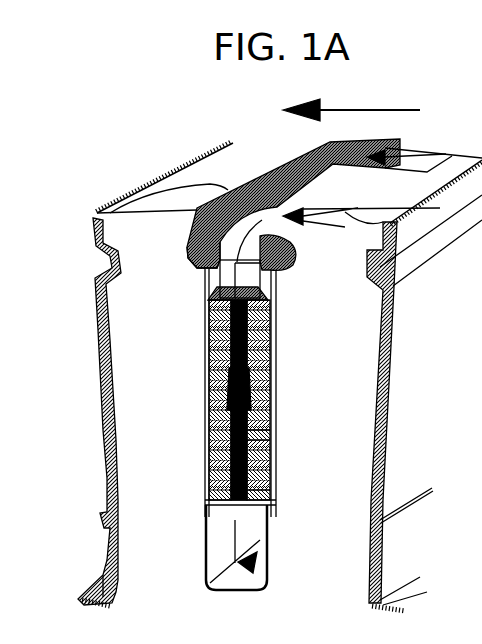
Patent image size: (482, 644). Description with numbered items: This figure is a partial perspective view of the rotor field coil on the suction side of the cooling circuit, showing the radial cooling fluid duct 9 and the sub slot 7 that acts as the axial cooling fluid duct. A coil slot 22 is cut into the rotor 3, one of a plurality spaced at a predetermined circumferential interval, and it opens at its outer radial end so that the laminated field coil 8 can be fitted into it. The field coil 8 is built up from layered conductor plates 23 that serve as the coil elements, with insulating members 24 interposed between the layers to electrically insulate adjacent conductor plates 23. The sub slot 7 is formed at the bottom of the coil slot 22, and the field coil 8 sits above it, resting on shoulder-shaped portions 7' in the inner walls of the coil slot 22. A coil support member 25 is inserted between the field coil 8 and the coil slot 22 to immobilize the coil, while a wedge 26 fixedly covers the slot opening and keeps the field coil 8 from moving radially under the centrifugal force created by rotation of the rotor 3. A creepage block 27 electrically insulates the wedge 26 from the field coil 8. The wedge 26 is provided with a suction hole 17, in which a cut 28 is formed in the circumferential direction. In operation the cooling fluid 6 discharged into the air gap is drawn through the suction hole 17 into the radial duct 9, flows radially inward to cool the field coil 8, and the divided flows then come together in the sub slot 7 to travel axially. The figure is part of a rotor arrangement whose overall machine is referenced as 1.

The gas sensor device 1 is at (397, 130).
The rotor 3 is at (138, 477).
The cooling fluid 6 is at (357, 107).
The sub slot 7 is at (209, 547).
The shoulder-shaped portion 7' is at (258, 546).
The field coil 8 is at (198, 297).
The radial cooling fluid duct 9 is at (265, 467).
The suction hole 17 is at (160, 188).
The coil slot 22 is at (100, 377).
The conductor plate 23 is at (270, 332).
The insulating member 24 is at (268, 367).
The coil support member 25 is at (273, 437).
The wedge 26 is at (190, 258).
The creepage block 27 is at (203, 283).
The cut 28 is at (322, 223).